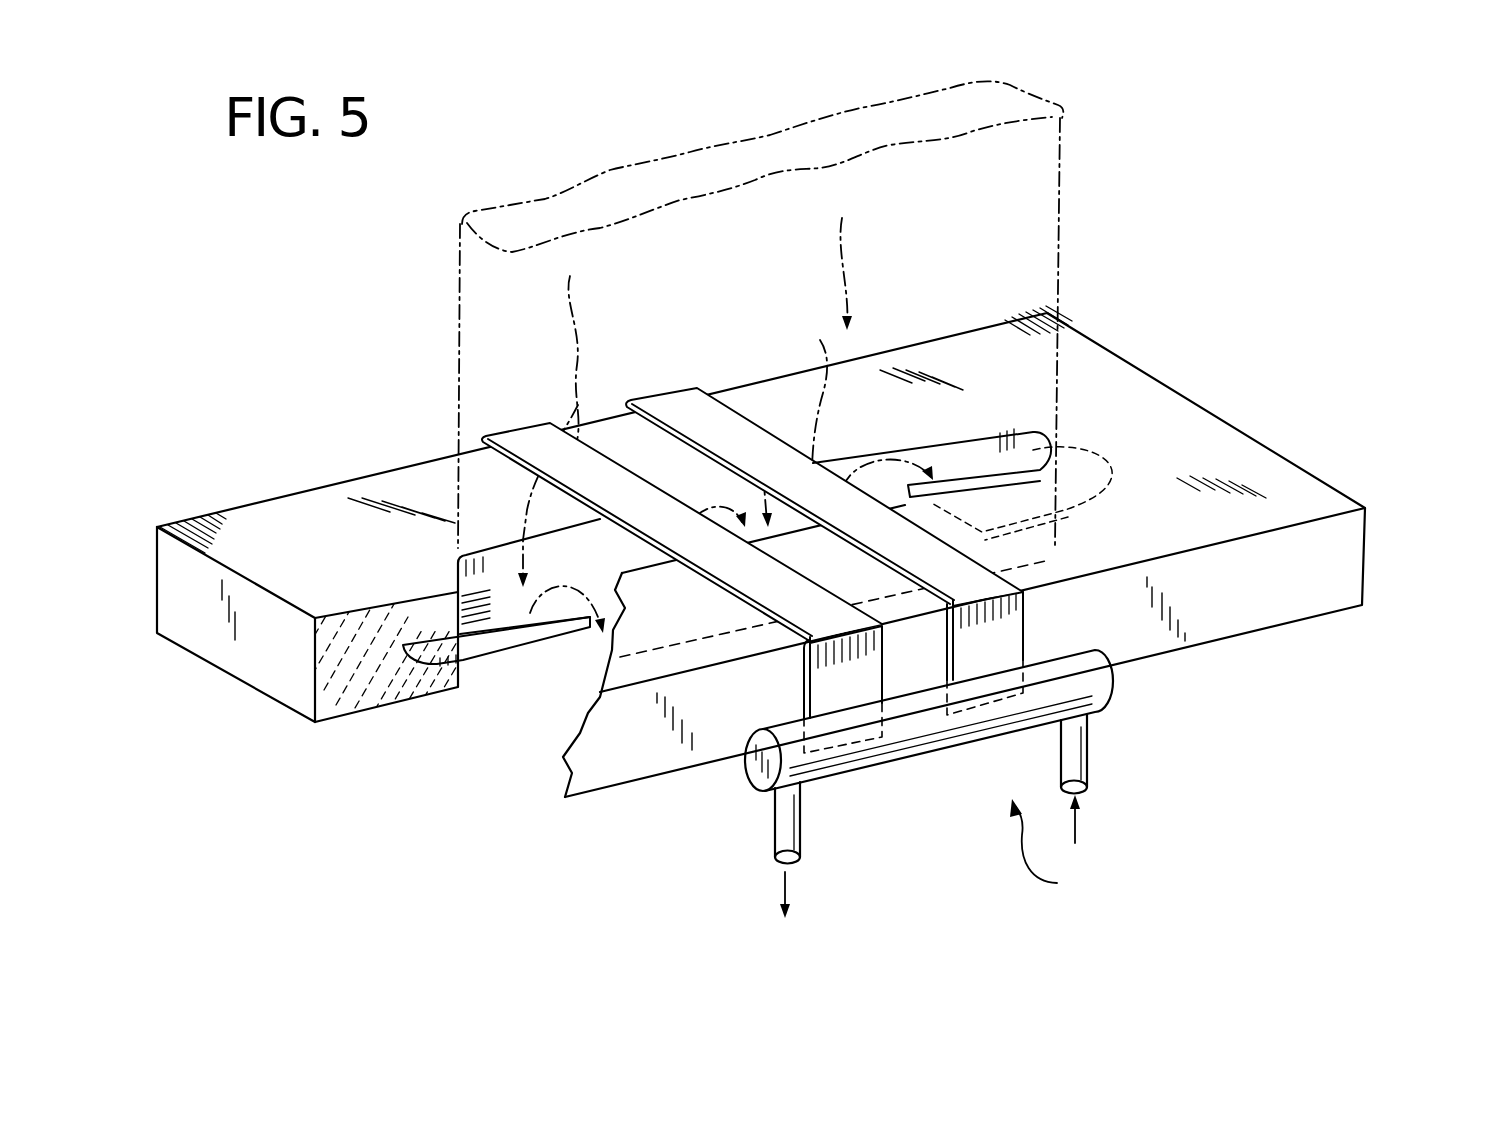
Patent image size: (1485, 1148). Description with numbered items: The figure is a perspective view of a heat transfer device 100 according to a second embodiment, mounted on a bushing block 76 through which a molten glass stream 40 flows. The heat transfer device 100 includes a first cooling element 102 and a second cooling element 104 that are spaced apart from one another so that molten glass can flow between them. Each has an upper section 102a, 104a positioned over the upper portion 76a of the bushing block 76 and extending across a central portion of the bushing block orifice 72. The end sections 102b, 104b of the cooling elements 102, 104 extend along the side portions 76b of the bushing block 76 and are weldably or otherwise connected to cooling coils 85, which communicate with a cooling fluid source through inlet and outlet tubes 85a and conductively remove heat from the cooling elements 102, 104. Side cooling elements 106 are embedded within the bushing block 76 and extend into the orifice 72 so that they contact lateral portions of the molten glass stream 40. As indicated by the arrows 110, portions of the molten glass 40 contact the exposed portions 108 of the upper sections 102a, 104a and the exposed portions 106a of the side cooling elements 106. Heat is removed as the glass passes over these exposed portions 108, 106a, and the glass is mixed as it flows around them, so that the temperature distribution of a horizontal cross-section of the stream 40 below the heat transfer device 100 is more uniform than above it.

The molten glass stream 40 is at (1040, 181).
The bushing block orifice 72 is at (1020, 480).
The bushing block 76 is at (1342, 543).
The upper portion of the bushing block 76a is at (1207, 440).
The side portions of the bushing block 76b is at (1310, 592).
The cooling coils 85 is at (930, 730).
The inlet and outlet tubes 85a is at (777, 820).
The heat transfer device 100 is at (1061, 849).
The first cooling element 102 is at (722, 656).
The upper section of the first cooling element 102a is at (730, 565).
The end section of the first cooling element 102b is at (840, 688).
The second cooling element 104 is at (937, 551).
The upper section of the second cooling element 104a is at (957, 568).
The end section of the second cooling element 104b is at (1012, 622).
The side cooling elements 106 is at (480, 635).
The exposed portions of the side cooling elements 106a is at (962, 481).
The exposed portions of the upper sections 108 is at (866, 597).
The arrows 110 is at (503, 512).